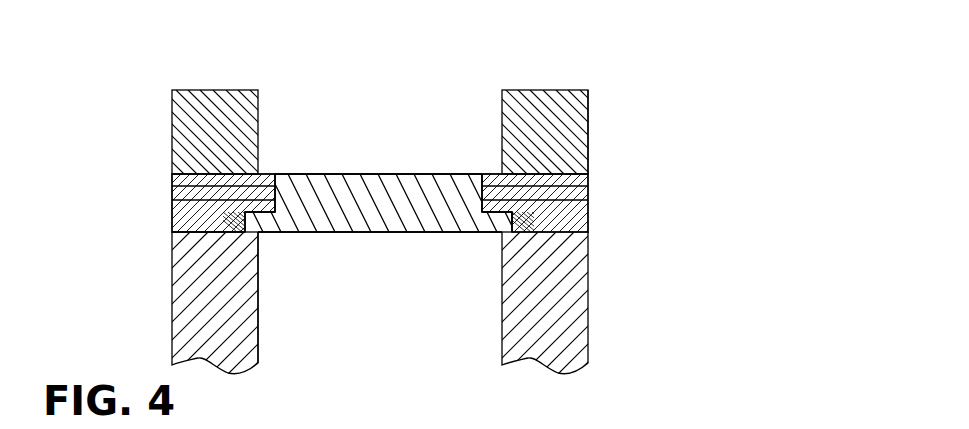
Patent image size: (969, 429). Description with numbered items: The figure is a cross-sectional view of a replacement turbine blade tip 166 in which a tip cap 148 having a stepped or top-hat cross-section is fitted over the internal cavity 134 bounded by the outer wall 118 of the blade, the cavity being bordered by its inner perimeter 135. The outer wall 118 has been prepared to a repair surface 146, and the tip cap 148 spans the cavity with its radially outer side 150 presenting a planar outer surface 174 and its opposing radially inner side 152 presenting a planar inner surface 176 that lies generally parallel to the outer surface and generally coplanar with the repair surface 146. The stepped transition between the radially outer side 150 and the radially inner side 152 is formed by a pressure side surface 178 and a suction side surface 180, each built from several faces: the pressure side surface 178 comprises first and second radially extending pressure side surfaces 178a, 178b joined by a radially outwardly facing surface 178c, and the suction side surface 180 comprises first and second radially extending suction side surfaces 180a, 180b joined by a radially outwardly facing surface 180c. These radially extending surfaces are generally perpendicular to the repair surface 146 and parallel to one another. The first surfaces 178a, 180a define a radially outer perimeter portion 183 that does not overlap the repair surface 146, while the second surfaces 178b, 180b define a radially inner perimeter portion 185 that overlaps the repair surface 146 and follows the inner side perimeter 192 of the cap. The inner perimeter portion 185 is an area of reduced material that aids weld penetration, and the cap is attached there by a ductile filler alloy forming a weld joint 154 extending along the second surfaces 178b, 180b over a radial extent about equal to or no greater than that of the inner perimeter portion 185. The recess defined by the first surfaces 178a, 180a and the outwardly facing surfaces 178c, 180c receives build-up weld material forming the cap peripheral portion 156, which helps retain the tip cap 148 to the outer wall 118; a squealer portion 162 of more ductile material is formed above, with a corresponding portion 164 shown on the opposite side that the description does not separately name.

The outer wall 118 is at (172, 312).
The internal cavity 134 is at (318, 288).
The inner perimeter 135 is at (259, 312).
The repair surface 146 is at (250, 217).
The tip cap 148 is at (410, 164).
The radially outer side 150 is at (378, 174).
The radially inner side 152 is at (405, 234).
The weld joint 154 is at (232, 232).
The cap peripheral portion 156 is at (490, 174).
The squealer portion 162 is at (172, 102).
The second post 164 is at (553, 89).
The blade tip 166 is at (603, 85).
The planar outer surface 174 is at (330, 174).
The planar inner surface 176 is at (335, 234).
The pressure side surface 178 is at (258, 174).
The first radially extending pressure side surface 178a is at (262, 189).
The second radially extending pressure side surface 178b is at (235, 232).
The radially outwardly facing surface 178c is at (258, 207).
The suction side surface 180 is at (495, 186).
The first radially extending suction side surface 180a is at (522, 187).
The second radially extending suction side surface 180b is at (520, 215).
The radially outwardly facing surface 180c is at (520, 205).
The radially outer perimeter portion 183 is at (266, 174).
The radially inner perimeter portion 185 is at (515, 208).
The inner side perimeter 192 is at (512, 232).